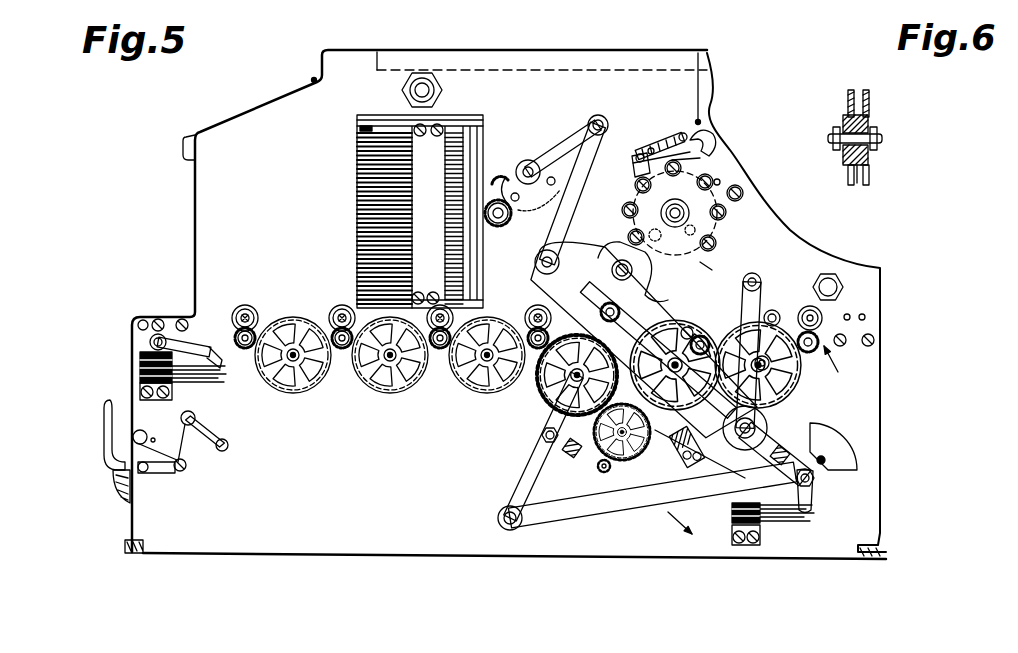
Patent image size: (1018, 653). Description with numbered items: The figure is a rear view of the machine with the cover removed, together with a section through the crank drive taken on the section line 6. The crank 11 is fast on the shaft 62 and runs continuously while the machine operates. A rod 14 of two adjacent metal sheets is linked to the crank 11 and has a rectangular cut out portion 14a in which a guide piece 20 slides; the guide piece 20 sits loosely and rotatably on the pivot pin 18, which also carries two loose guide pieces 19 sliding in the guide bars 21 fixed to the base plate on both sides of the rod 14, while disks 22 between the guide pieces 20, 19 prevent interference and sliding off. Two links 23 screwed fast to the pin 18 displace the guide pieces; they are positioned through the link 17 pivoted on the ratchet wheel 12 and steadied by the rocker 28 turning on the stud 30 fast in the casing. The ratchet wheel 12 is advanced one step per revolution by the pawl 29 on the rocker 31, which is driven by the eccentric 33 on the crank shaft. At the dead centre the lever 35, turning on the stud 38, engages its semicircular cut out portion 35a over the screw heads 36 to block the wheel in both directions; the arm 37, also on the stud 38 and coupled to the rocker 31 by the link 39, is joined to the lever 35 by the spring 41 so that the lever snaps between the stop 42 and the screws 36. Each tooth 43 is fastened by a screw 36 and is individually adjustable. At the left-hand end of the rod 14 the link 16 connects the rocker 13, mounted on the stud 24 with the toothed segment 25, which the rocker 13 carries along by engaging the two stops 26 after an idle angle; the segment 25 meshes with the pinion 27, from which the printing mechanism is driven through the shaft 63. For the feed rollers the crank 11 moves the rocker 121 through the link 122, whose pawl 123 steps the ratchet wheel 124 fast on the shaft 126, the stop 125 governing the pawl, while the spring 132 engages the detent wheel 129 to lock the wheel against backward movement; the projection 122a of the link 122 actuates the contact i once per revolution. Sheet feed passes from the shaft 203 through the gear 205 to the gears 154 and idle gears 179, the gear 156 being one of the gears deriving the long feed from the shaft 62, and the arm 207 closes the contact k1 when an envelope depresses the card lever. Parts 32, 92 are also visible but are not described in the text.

In FIG. 5, the stop 42 is at (699, 56).
In FIG. 5, the semicircular cut out portion 35a is at (706, 134).
In FIG. 5, the stud 38 is at (637, 163).
In FIG. 5, the pawl 29 is at (719, 181).
In FIG. 5, the teeth 43 is at (680, 163).
In FIG. 5, the screw on type disc 32 is at (740, 190).
In FIG. 5, the rocker 31 is at (727, 208).
In FIG. 5, the screws 36 is at (718, 213).
In FIG. 5, the hub of type disc 92 is at (684, 216).
In FIG. 5, the ratchet wheel 12 is at (697, 236).
In FIG. 5, the link 17 is at (708, 268).
In FIG. 5, the stud 30 is at (761, 282).
In FIG. 5, the rocker 28 is at (770, 293).
In FIG. 5, the shaft 203 is at (788, 317).
In FIG. 5, the gear 156 is at (832, 318).
In FIG. 5, the gear 205 is at (818, 340).
In FIG. 5, the links 23 is at (770, 360).
In FIG. 6, the links 23 is at (873, 208).
In FIG. 5, the section line 6 is at (758, 449).
In FIG. 5, the pivot pin 18 is at (757, 430).
In FIG. 6, the pivot pin 18 is at (883, 139).
In FIG. 5, the rectangular cut out portion 14a is at (797, 457).
In FIG. 5, the rod 14 is at (803, 455).
In FIG. 6, the rod 14 is at (857, 176).
In FIG. 5, the shaft 62 is at (827, 460).
In FIG. 5, the crank 11 is at (848, 462).
In FIG. 5, the eccentric 33 is at (837, 477).
In FIG. 5, the projection 122a is at (813, 503).
In FIG. 5, the contact i is at (802, 527).
In FIG. 5, the disks 22 is at (690, 495).
In FIG. 6, the disks 22 is at (868, 122).
In FIG. 5, the detent wheel 129 is at (658, 432).
In FIG. 5, the link 122 is at (572, 510).
In FIG. 5, the rocker 121 is at (527, 488).
In FIG. 5, the pawl 123 is at (552, 457).
In FIG. 5, the stop 125 is at (572, 455).
In FIG. 5, the ratchet wheel 124 is at (605, 472).
In FIG. 5, the shaft 126 is at (643, 462).
In FIG. 5, the spring 132 is at (684, 435).
In FIG. 5, the idle gears 179 is at (388, 395).
In FIG. 5, the gears 154 is at (341, 352).
In FIG. 5, the contact k1 is at (225, 380).
In FIG. 5, the arm 207 is at (172, 343).
In FIG. 5, the shaft 63 is at (497, 224).
In FIG. 5, the stops 26 is at (551, 184).
In FIG. 5, the guide bars 21 is at (577, 258).
In FIG. 6, the guide bars 21 is at (865, 90).
In FIG. 5, the stud 24 is at (530, 163).
In FIG. 5, the pinion 27 is at (522, 176).
In FIG. 5, the rocker 13 is at (512, 184).
In FIG. 5, the toothed segment 25 is at (504, 177).
In FIG. 5, the link 16 is at (578, 172).
In FIG. 5, the arm 37 is at (638, 155).
In FIG. 5, the spring 41 is at (650, 148).
In FIG. 5, the lever 35 is at (666, 134).
In FIG. 5, the link 39 is at (633, 170).
In FIG. 6, the guide piece 20 is at (847, 130).
In FIG. 6, the guide pieces 19 is at (872, 161).